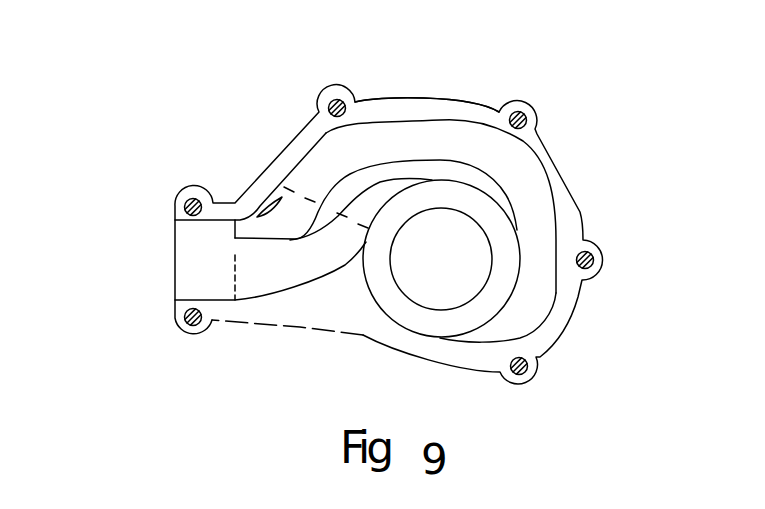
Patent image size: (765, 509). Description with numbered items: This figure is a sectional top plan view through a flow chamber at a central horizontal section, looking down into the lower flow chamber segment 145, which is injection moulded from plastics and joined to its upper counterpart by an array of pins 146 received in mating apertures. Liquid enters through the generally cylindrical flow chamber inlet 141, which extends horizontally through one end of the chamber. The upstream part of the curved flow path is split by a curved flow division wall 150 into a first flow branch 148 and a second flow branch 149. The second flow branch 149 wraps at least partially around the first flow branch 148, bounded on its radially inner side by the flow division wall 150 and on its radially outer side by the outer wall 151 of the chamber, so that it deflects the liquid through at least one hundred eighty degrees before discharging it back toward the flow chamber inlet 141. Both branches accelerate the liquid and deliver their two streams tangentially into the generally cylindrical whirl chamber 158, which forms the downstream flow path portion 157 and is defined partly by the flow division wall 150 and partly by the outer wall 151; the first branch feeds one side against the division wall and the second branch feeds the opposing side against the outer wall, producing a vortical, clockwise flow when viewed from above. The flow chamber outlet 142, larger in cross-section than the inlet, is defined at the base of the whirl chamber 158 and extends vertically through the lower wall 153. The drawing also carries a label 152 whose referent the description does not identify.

The flow chamber inlet 141 is at (192, 268).
The flow chamber outlet 142 is at (450, 279).
The lower flow chamber segment 145 is at (167, 141).
The pins 146 is at (517, 122).
The first flow branch 148 is at (357, 212).
The second flow branch 149 is at (385, 140).
The curved flow division wall 150 is at (342, 187).
The outer wall 151 is at (452, 127).
The flow passage 152 is at (274, 253).
The lower wall 153 is at (504, 245).
The downstream flow path portion 157 is at (487, 293).
The whirl chamber 158 is at (427, 333).